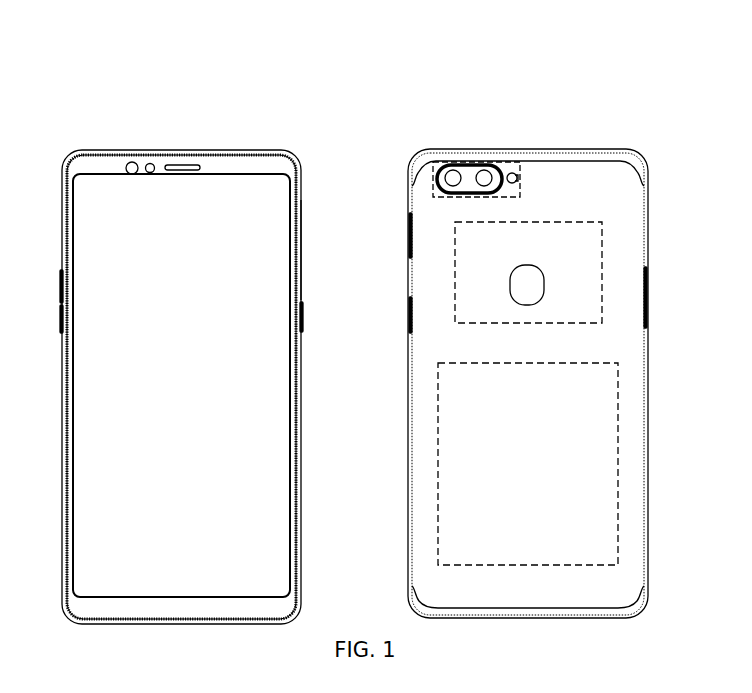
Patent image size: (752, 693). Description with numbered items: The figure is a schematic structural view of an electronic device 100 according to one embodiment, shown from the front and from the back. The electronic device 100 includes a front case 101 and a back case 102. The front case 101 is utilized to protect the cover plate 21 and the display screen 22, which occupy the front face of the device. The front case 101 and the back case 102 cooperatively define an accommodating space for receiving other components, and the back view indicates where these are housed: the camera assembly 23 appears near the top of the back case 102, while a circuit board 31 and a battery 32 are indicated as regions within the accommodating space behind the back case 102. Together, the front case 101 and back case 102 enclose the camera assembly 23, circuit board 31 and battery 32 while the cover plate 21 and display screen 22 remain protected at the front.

The electronic device 100 is at (280, 66).
The front case 101 is at (98, 163).
The back case 102 is at (583, 170).
The cover plate 21 is at (253, 158).
The display screen 22 is at (190, 212).
The camera assembly 23 is at (297, 212).
The circuit board 31 is at (593, 272).
The battery 32 is at (593, 437).